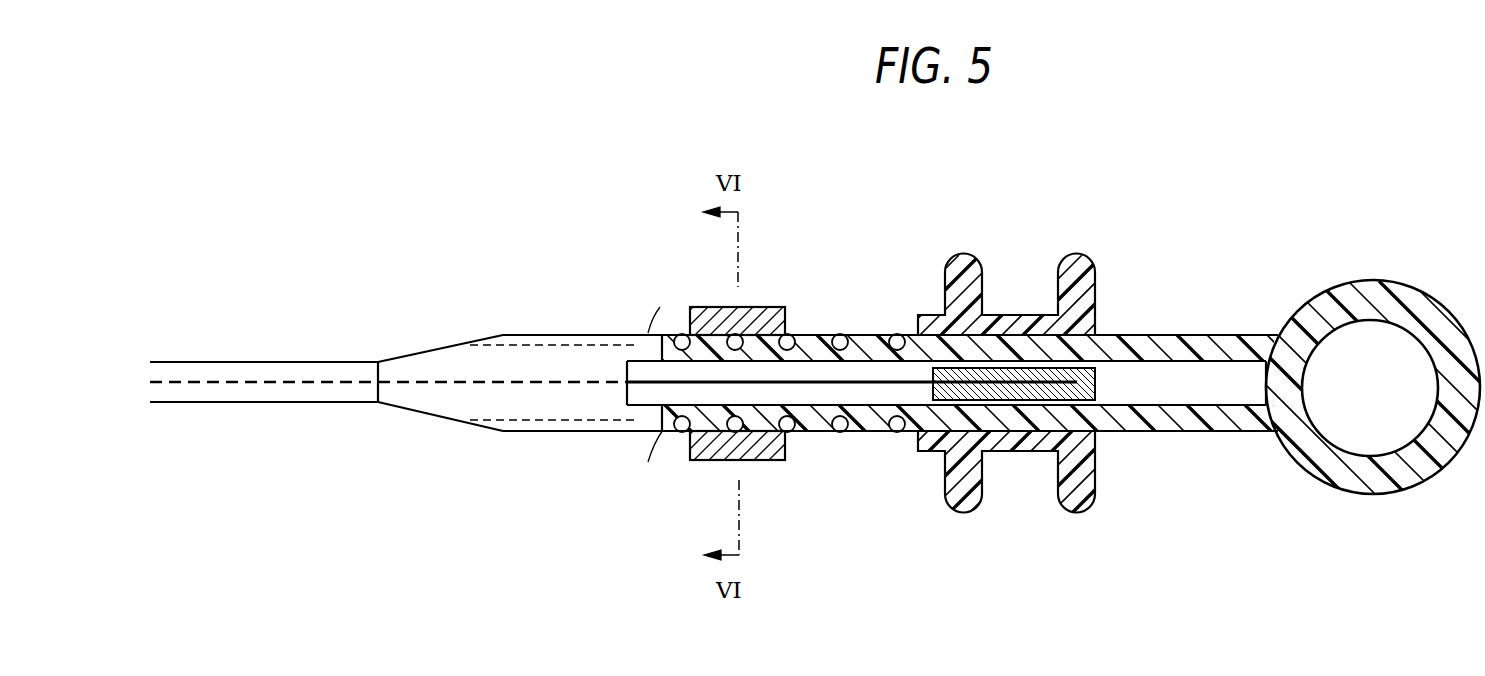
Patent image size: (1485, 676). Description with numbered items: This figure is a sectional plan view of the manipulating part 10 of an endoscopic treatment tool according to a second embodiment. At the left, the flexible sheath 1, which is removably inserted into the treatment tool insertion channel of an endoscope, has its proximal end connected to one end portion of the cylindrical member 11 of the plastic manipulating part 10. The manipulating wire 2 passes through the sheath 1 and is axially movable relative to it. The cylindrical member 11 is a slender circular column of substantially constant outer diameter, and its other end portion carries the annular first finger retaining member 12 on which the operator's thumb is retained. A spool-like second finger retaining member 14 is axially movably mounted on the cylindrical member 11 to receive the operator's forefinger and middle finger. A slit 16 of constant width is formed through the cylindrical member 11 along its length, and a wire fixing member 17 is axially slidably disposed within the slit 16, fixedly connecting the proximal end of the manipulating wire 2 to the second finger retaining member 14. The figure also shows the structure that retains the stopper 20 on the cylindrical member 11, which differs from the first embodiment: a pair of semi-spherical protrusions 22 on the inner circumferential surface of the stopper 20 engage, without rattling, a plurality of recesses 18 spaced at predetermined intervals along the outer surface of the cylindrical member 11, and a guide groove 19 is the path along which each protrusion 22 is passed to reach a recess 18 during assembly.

The flexible sheath 1 is at (322, 362).
The manipulating wire 2 is at (863, 395).
The manipulating part 10 is at (1031, 372).
The cylindrical member 11 is at (1168, 432).
The first finger retaining member 12 is at (1365, 292).
The second finger retaining member 14 is at (1025, 312).
The slit 16 is at (1148, 360).
The wire fixing member 17 is at (1110, 432).
The recesses 18 is at (845, 334).
The guide groove 19 is at (558, 335).
The stopper 20 is at (693, 462).
The semi-spherical protrusion 22 is at (748, 307).